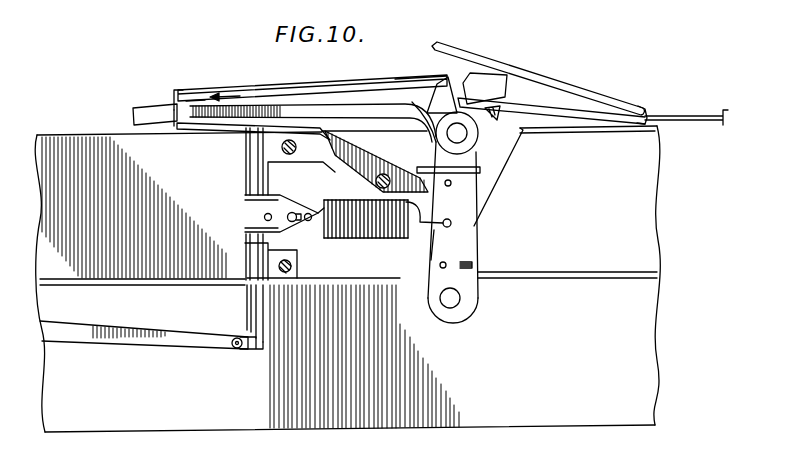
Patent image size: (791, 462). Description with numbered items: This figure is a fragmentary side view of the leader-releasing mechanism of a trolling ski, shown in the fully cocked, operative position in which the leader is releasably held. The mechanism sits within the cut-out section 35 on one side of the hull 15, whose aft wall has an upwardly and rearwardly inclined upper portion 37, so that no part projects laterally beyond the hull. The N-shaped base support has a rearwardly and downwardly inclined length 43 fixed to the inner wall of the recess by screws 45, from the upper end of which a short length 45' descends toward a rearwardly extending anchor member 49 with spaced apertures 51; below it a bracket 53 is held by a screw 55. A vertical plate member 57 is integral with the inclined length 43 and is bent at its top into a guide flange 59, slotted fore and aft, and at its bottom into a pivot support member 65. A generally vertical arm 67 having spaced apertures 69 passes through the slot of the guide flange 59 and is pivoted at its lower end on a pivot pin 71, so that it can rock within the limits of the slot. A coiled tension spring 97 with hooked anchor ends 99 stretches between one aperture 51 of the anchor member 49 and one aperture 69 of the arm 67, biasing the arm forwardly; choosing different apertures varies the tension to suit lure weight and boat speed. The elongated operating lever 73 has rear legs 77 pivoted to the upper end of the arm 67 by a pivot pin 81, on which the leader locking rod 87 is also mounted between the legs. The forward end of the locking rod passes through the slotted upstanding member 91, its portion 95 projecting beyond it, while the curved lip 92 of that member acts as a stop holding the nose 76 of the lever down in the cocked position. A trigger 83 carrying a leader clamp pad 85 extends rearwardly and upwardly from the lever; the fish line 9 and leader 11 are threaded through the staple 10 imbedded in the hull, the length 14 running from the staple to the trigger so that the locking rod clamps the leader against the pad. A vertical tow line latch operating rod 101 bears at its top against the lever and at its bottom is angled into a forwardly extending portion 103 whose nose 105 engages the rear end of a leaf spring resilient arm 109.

The fish line 9 is at (583, 90).
The staple 10 is at (639, 107).
The leader 11 is at (690, 127).
The length 14 is at (590, 110).
The hull section 15 is at (80, 135).
The cut-out section 35 is at (345, 199).
The inclined upper portion of aft wall 37 is at (522, 140).
The inclined length 43 is at (365, 166).
The screws 45 is at (253, 144).
The short length 45' is at (290, 161).
The anchor member 49 is at (283, 224).
The apertures 51 is at (264, 217).
The bracket 53 is at (270, 284).
The screw 55 is at (292, 268).
The vertically disposed plate member 57 is at (476, 240).
The guide flange 59 is at (481, 170).
The pivot support member 65 is at (480, 310).
The arm 67 is at (438, 253).
The apertures 69 is at (451, 184).
The pivot pin 71 is at (452, 302).
The operating lever 73 is at (400, 80).
The nose 76 is at (191, 101).
The leg 77 is at (443, 84).
The pivot pin 81 is at (460, 137).
The trigger 83 is at (497, 80).
The leader clamp pad 85 is at (477, 82).
The leader locking rod 87 is at (248, 90).
The upstanding member 91 is at (174, 125).
The curved lip 92 is at (177, 89).
The forward portion of locking rod 95 is at (134, 114).
The coiled tension spring 97 is at (366, 240).
The anchor ends 99 is at (423, 230).
The tow line latch operating rod 101 is at (260, 300).
The forwardly extending portion 103 is at (258, 350).
The nose 105 is at (235, 349).
The leaf spring resilient arm 109 is at (190, 342).